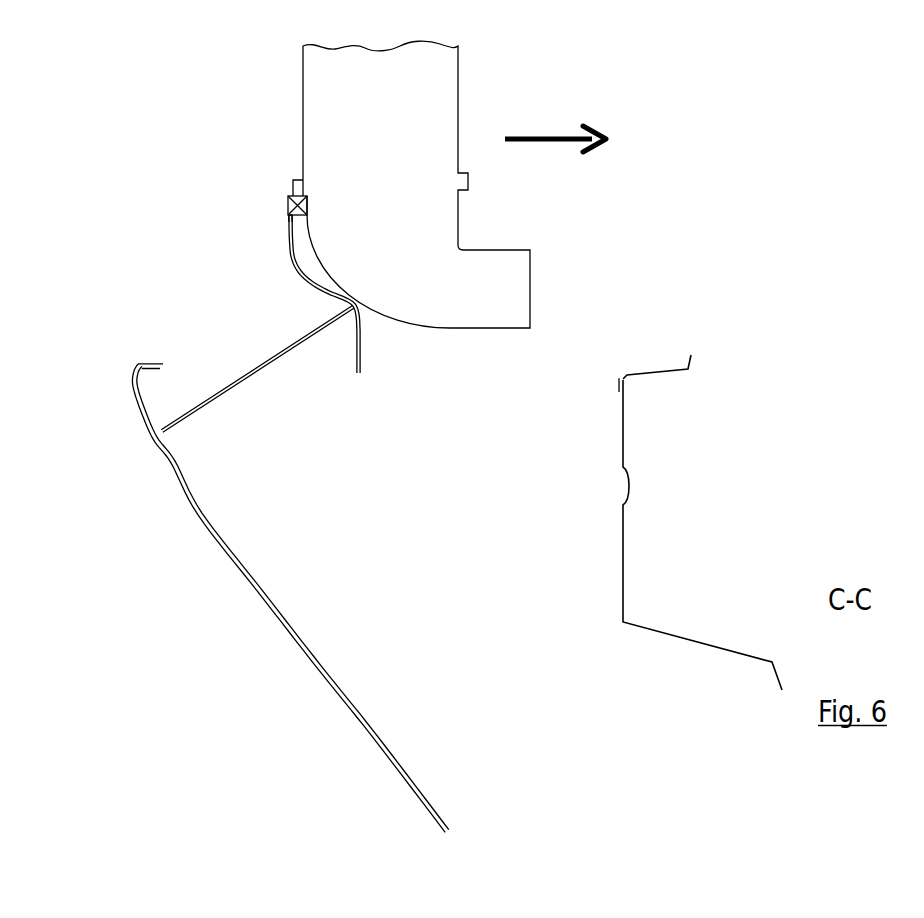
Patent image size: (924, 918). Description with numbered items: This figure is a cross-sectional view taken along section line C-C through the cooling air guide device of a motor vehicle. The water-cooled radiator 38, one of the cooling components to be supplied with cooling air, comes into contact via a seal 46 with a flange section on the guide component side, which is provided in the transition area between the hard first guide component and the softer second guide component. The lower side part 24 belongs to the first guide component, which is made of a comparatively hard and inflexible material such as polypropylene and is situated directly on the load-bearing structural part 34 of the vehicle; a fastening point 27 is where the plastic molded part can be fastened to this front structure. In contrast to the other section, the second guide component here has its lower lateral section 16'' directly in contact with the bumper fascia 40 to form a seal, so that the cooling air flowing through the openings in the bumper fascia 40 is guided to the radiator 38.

The water-cooled radiator 38 is at (516, 282).
The seal 46 is at (290, 200).
The fastening point 27 is at (293, 211).
The lower side part 24 is at (322, 276).
The lower lateral section 16'' is at (257, 386).
The bumper fascia 40 is at (200, 514).
The load-bearing structural part 34 is at (623, 427).